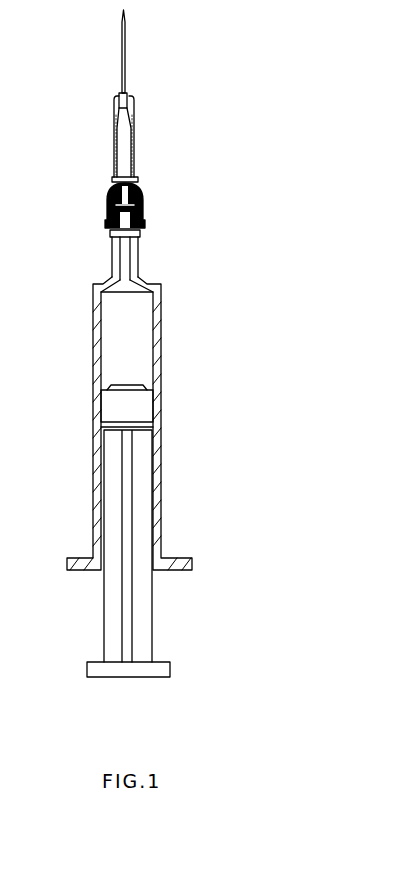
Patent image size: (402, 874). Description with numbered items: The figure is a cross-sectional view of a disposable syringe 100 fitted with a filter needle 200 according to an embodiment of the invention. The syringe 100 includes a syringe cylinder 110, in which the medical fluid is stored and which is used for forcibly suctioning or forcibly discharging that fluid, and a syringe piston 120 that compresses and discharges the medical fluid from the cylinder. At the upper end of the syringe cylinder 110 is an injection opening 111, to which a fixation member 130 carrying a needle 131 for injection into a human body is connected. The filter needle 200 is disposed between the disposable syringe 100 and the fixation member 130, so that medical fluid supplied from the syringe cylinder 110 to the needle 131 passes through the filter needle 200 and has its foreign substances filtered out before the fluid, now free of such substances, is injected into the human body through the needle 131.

The syringe 100 is at (170, 453).
The syringe cylinder 110 is at (145, 400).
The injection opening 111 is at (113, 256).
The syringe piston 120 is at (146, 612).
The fixation member 130 is at (152, 128).
The needle 131 is at (126, 42).
The filter needle 200 is at (101, 196).